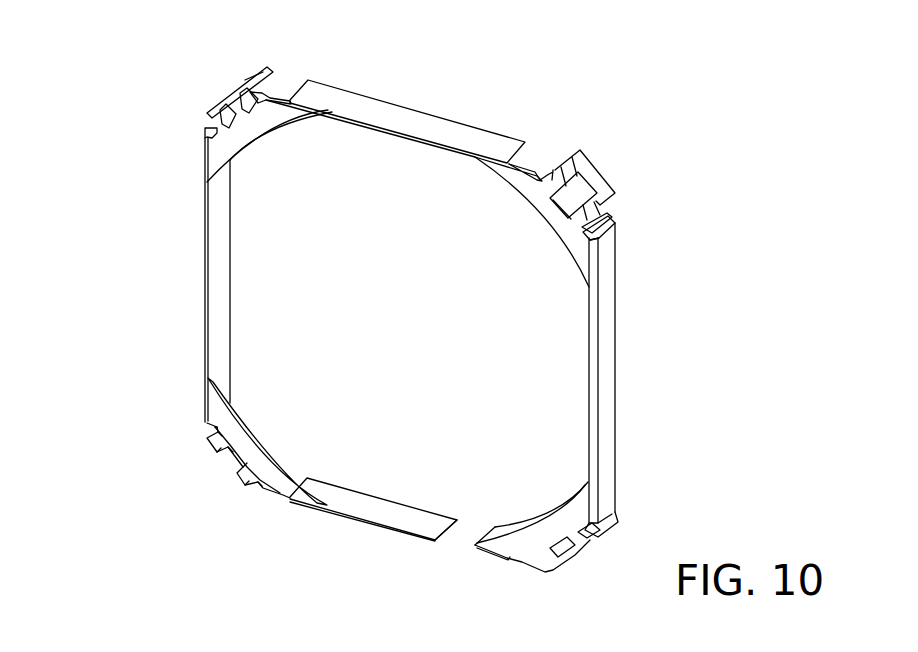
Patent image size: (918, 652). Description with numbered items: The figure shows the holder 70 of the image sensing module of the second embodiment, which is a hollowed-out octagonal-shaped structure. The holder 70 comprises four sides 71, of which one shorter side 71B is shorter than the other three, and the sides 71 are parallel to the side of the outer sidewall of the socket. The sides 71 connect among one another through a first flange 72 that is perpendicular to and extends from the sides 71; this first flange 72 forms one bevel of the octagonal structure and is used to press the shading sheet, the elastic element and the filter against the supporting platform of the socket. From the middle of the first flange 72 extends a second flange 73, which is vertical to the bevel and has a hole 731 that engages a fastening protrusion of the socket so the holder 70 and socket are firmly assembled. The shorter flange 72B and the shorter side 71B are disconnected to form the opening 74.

The holder 70 is at (66, 58).
The side 71 is at (413, 125).
The first flange 72 is at (553, 170).
The hole 731 is at (590, 178).
The second flange 73 is at (615, 195).
The shorter side 71B is at (377, 505).
The opening 74 is at (460, 538).
The shorter flange 72B is at (533, 547).